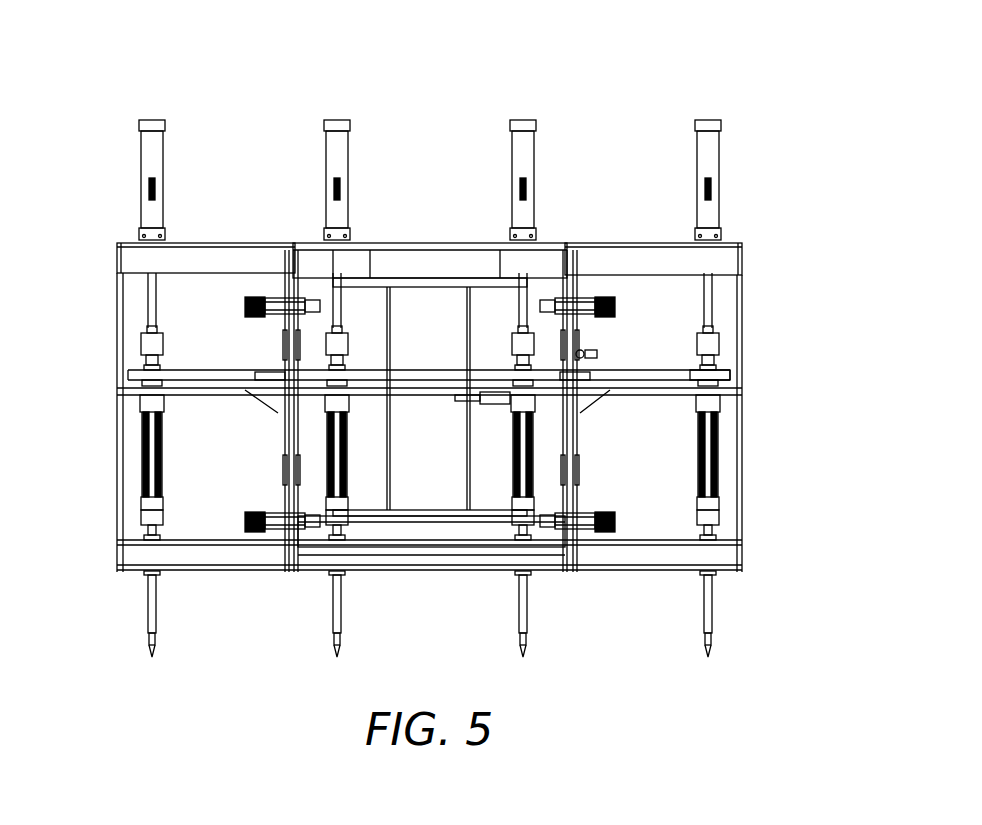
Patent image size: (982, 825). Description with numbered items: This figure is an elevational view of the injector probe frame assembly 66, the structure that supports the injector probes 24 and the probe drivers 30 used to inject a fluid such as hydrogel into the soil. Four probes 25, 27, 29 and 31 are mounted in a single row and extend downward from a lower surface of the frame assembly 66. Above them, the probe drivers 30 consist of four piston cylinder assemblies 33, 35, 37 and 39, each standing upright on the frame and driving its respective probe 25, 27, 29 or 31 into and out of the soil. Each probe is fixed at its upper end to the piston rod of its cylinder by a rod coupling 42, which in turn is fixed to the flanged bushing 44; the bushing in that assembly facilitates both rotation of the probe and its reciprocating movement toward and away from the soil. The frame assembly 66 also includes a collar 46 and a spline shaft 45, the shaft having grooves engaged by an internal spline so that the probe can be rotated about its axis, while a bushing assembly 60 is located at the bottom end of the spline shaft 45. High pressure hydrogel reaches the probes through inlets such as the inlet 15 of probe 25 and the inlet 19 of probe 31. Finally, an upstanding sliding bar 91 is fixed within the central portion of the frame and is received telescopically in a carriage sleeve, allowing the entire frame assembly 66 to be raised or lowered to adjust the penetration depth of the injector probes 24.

The injector probe frame assembly 66 is at (645, 75).
The sliding bar 91 is at (425, 308).
The piston cylinder assembly 39 is at (152, 160).
The piston cylinder assembly 37 is at (337, 160).
The piston cylinder assembly 35 is at (523, 160).
The piston cylinder assembly 33 is at (707, 160).
The probe drivers 30 is at (742, 212).
The rod coupling 42 is at (718, 345).
The flanged bushing 44 is at (722, 382).
The collar 46 is at (720, 412).
The spline shaft 45 is at (715, 465).
The bushing assembly 60 is at (720, 508).
The inlet 15 is at (718, 520).
The injector probes 24 is at (740, 607).
The inlet 19 is at (160, 513).
The probe 31 is at (145, 618).
The probe 29 is at (330, 618).
The probe 27 is at (517, 617).
The probe 25 is at (703, 613).